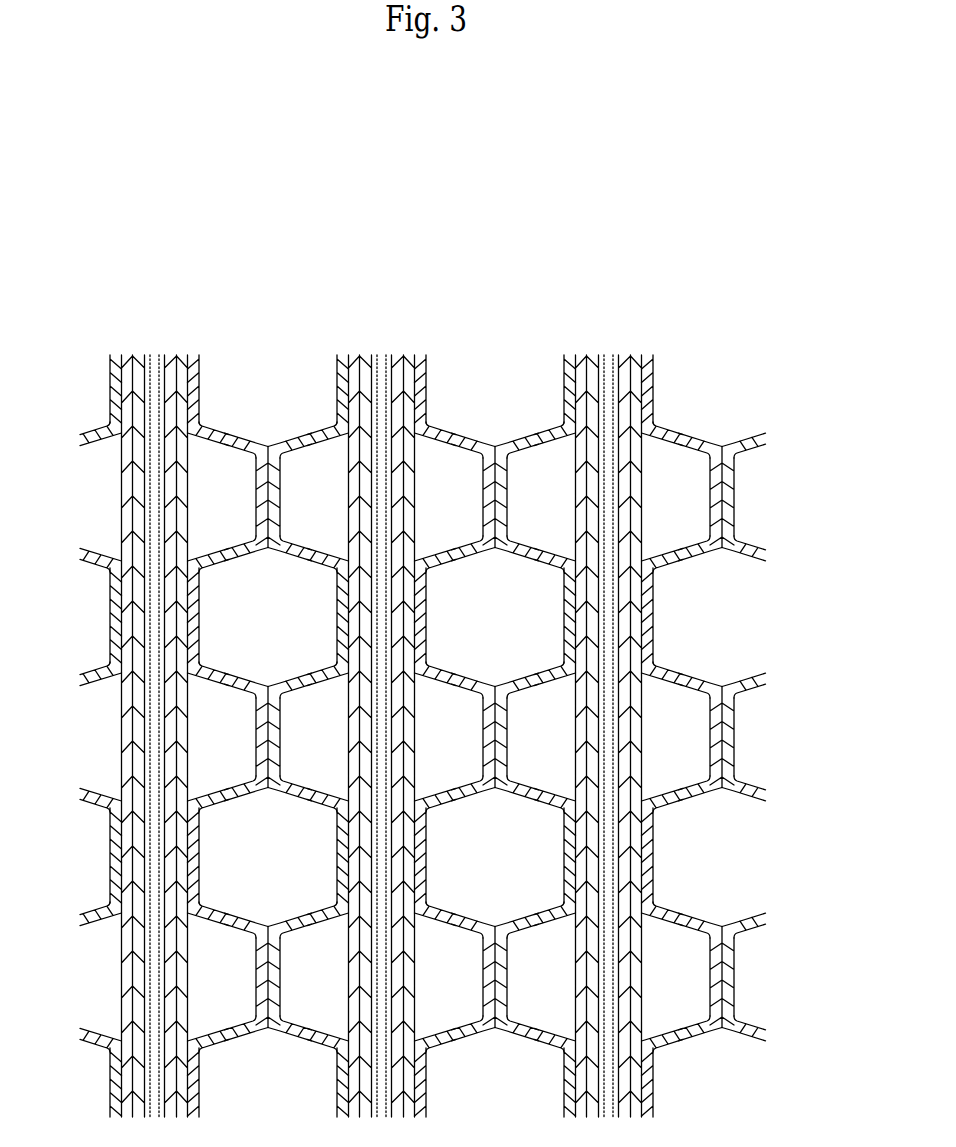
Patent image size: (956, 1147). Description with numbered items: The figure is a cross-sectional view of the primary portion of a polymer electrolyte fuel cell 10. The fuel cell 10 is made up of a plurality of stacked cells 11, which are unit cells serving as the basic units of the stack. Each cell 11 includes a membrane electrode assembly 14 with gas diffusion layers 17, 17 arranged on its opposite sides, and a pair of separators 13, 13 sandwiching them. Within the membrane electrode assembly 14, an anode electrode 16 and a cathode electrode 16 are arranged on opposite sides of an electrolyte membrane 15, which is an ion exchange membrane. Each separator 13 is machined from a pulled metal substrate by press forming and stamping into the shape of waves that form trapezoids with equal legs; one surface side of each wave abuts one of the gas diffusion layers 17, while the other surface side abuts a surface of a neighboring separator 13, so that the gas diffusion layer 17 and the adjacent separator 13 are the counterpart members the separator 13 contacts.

The fuel cell 10 is at (748, 240).
The cell 11 is at (382, 663).
The separator 13 is at (423, 650).
The membrane electrode assembly 14 is at (381, 698).
The electrolyte membrane 15 is at (382, 711).
The anode electrode / cathode electrode 16 is at (382, 711).
The gas diffusion layer 17 is at (381, 711).